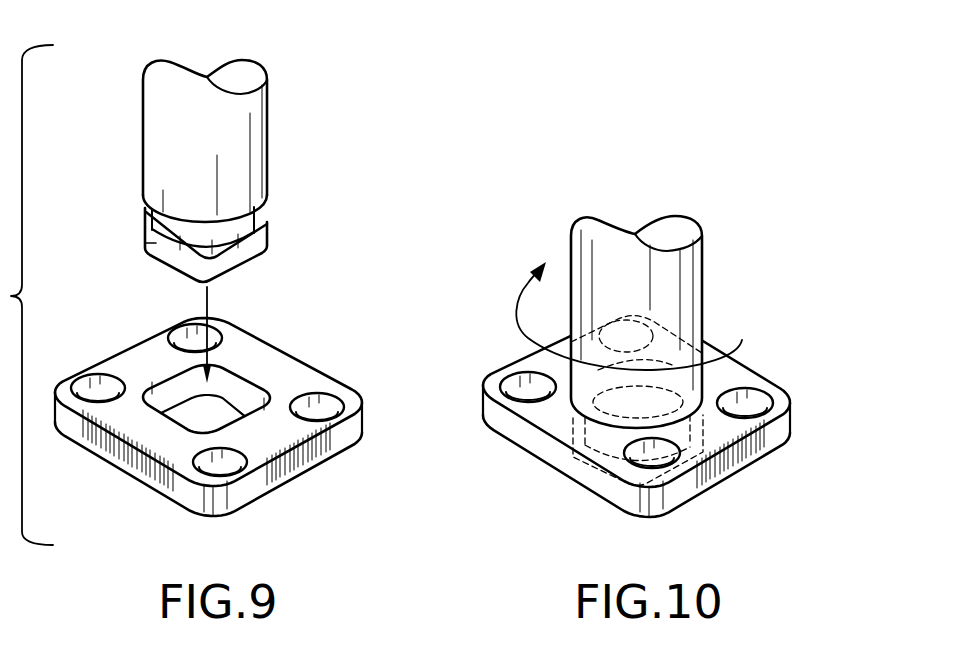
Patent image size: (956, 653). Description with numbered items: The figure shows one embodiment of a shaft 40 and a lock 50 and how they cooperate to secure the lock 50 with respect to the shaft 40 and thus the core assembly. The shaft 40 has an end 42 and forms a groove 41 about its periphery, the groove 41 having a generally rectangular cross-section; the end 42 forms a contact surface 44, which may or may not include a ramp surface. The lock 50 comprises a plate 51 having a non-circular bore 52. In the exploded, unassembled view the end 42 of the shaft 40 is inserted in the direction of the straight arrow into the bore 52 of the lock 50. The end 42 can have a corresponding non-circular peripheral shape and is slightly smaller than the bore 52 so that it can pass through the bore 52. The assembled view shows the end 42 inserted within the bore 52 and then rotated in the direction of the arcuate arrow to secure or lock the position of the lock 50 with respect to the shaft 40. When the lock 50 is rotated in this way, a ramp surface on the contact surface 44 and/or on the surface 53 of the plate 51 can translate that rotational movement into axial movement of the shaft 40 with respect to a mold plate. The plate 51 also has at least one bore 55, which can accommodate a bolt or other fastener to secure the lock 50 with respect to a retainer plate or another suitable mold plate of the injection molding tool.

In FIG. 9, the lock 50 is at (355, 112).
In FIG. 10, the lock 50 is at (720, 140).
In FIG. 9, the shaft 40 is at (160, 128).
In FIG. 10, the shaft 40 is at (690, 285).
In FIG. 9, the groove 41 is at (254, 220).
In FIG. 9, the end 42 is at (145, 243).
In FIG. 9, the contact surface 44 is at (145, 209).
In FIG. 9, the plate 51 is at (257, 485).
In FIG. 10, the plate 51 is at (733, 378).
In FIG. 9, the bore 52 is at (219, 426).
In FIG. 9, the surface 53 is at (288, 378).
In FIG. 9, the bore 55 is at (100, 390).
In FIG. 10, the bore 55 is at (636, 420).